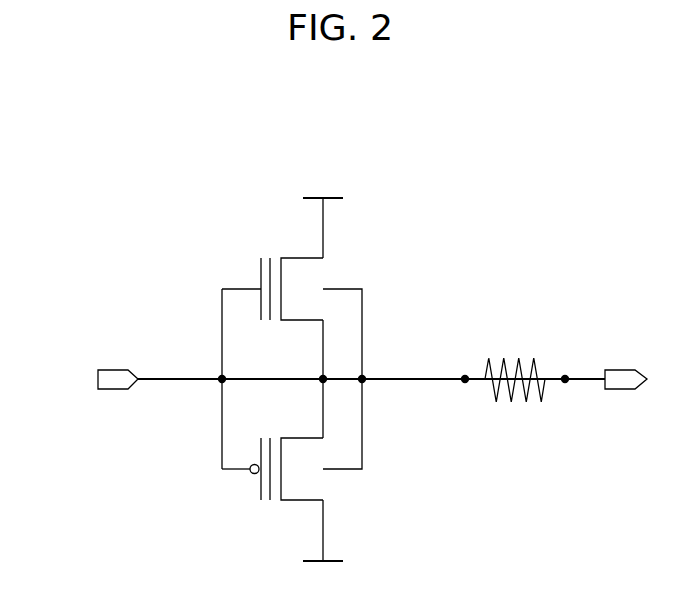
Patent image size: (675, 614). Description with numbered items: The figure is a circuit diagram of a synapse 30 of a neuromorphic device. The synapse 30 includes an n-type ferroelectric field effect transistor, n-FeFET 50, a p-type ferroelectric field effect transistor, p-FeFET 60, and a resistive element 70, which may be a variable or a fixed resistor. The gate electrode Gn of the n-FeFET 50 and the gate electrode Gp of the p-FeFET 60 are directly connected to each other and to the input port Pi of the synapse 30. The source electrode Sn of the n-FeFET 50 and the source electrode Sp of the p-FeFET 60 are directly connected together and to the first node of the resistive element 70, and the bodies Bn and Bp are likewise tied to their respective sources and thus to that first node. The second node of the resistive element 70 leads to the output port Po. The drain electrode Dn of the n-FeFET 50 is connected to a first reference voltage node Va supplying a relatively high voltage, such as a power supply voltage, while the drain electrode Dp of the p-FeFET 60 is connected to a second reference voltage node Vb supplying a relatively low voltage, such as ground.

The synapse 30 is at (405, 140).
The n-type ferroelectric field effect transistor (n-FeFET) 50 is at (267, 248).
The p-type ferroelectric field effect transistor (p-FeFET) 60 is at (270, 513).
The resistive element 70 is at (513, 343).